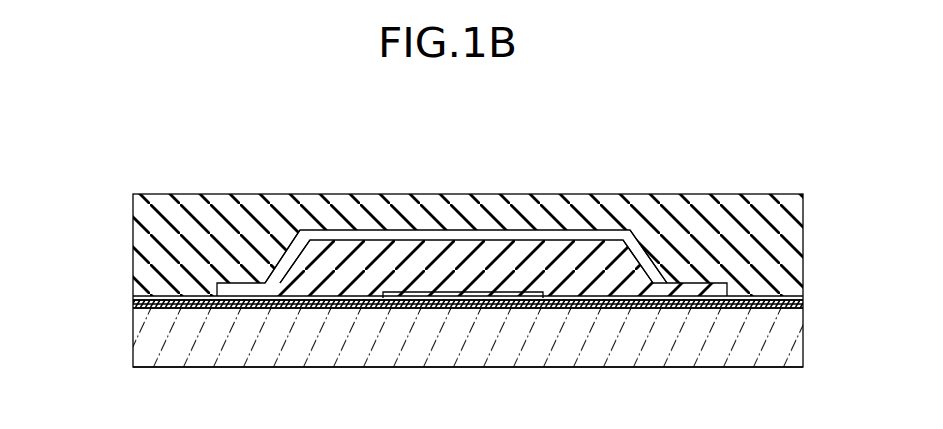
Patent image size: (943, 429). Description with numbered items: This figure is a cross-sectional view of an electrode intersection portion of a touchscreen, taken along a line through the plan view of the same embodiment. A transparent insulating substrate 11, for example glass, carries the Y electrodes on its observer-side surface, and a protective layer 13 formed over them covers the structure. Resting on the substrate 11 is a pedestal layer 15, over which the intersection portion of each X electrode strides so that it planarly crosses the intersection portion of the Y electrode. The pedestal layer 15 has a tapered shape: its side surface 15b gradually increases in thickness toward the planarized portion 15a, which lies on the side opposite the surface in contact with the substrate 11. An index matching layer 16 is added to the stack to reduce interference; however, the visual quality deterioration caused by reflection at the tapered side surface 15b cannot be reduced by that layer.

The substrate 11 is at (489, 357).
The protective layer 13 is at (763, 213).
The pedestal layer 15 is at (390, 260).
The planarized portion 15a is at (604, 233).
The side surface 15b is at (638, 250).
The index matching layer 16 is at (663, 302).